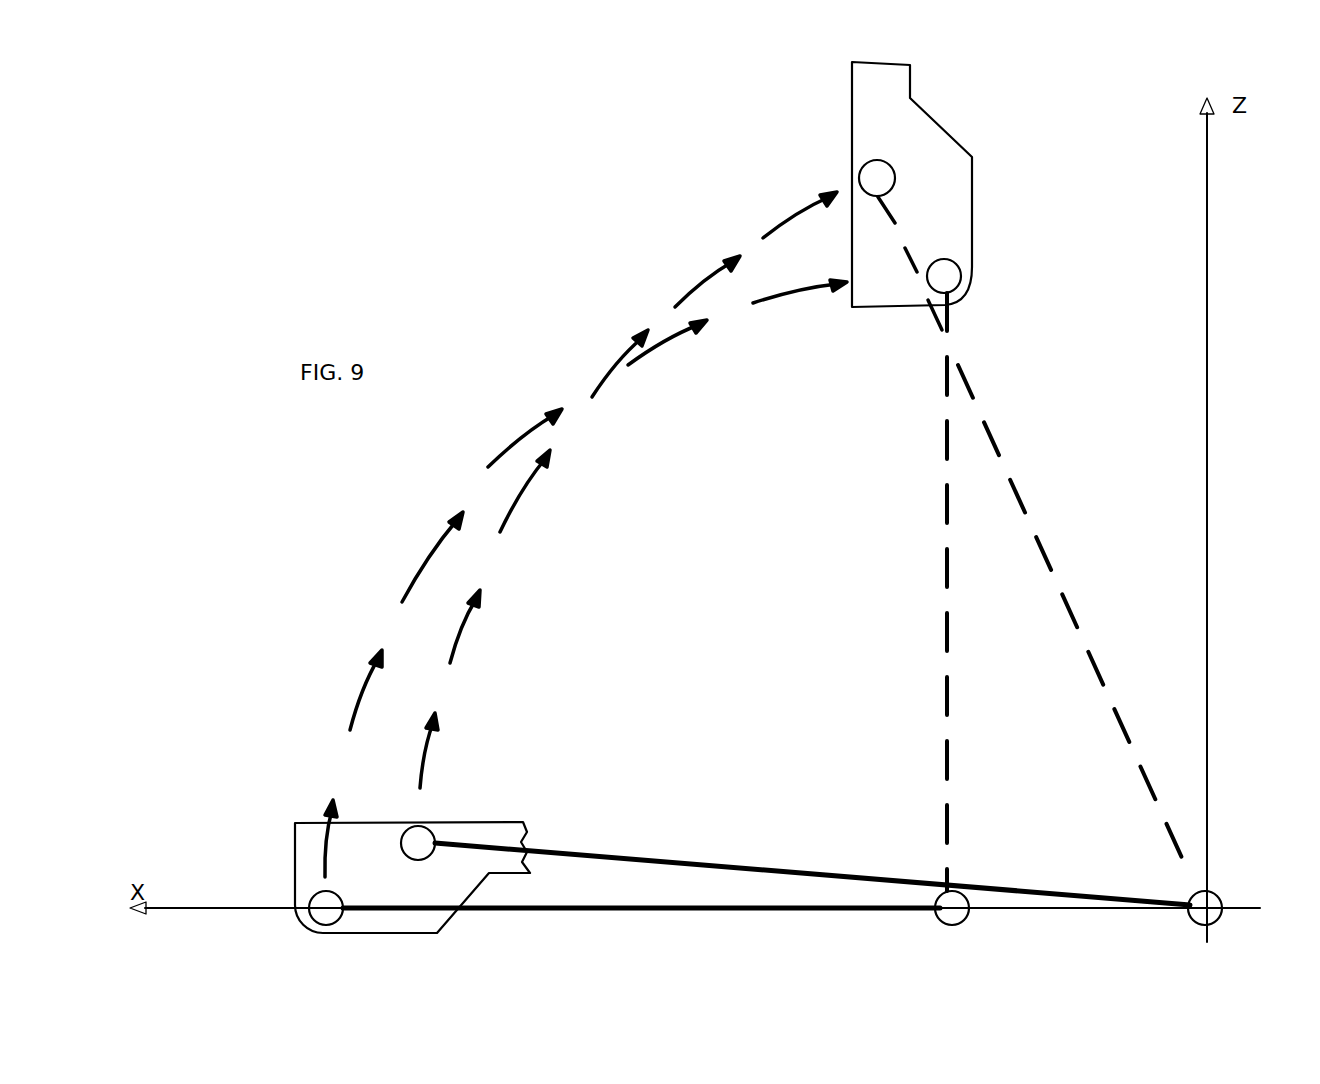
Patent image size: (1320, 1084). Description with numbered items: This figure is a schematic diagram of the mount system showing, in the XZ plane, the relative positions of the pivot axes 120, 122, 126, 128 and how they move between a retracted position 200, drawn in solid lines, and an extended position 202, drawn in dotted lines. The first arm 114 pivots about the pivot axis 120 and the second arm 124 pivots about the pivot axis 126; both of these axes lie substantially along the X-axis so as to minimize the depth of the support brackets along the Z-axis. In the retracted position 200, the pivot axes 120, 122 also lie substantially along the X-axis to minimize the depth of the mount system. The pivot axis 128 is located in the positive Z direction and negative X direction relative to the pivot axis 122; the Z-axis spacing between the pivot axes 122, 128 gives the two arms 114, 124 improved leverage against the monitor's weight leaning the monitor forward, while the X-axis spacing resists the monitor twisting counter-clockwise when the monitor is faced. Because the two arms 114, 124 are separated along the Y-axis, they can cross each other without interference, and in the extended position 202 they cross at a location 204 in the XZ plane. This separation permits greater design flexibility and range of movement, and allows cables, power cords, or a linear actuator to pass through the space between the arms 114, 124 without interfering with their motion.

The first arm 114 is at (607, 910).
The pivot axis 120 is at (952, 925).
The pivot axis 122 is at (948, 275).
The second arm 124 is at (657, 857).
The pivot axis 126 is at (1214, 894).
The pivot axis 128 is at (887, 168).
The retracted position 200 is at (268, 858).
The extended position 202 is at (887, 330).
The location 204 is at (962, 322).